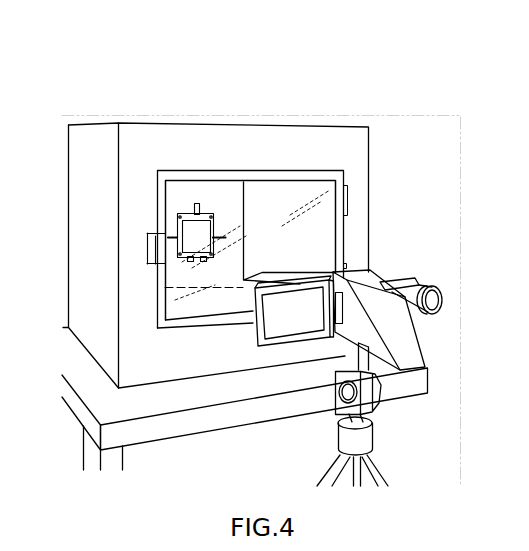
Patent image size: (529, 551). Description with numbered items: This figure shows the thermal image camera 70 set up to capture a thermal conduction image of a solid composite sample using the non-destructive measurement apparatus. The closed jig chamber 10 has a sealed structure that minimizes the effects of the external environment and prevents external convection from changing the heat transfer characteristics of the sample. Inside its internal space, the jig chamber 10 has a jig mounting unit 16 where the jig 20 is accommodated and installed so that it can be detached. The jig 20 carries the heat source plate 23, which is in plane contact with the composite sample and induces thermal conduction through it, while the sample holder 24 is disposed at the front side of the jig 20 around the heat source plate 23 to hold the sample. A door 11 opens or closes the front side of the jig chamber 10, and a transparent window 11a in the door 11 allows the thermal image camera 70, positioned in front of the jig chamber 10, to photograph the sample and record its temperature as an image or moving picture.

The jig chamber 10 is at (295, 114).
The door 11 is at (300, 174).
The transparent window 11a is at (318, 197).
The jig mounting unit 16 is at (175, 307).
The jig 20 is at (252, 237).
The heat source plate 23 is at (208, 215).
The sample holder 24 is at (168, 237).
The thermal image camera 70 is at (422, 339).